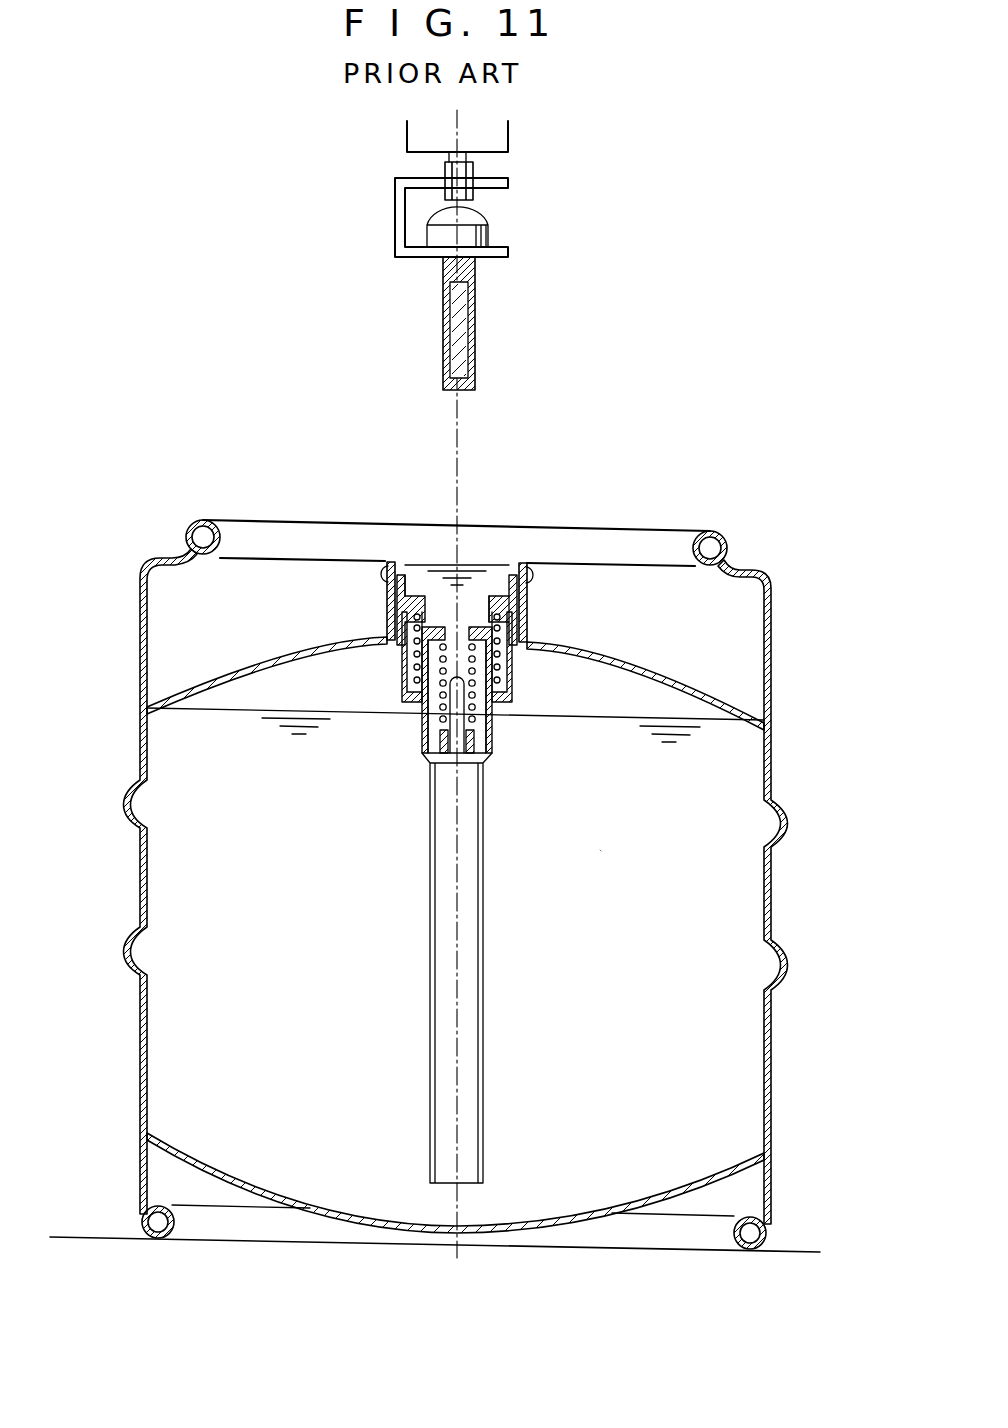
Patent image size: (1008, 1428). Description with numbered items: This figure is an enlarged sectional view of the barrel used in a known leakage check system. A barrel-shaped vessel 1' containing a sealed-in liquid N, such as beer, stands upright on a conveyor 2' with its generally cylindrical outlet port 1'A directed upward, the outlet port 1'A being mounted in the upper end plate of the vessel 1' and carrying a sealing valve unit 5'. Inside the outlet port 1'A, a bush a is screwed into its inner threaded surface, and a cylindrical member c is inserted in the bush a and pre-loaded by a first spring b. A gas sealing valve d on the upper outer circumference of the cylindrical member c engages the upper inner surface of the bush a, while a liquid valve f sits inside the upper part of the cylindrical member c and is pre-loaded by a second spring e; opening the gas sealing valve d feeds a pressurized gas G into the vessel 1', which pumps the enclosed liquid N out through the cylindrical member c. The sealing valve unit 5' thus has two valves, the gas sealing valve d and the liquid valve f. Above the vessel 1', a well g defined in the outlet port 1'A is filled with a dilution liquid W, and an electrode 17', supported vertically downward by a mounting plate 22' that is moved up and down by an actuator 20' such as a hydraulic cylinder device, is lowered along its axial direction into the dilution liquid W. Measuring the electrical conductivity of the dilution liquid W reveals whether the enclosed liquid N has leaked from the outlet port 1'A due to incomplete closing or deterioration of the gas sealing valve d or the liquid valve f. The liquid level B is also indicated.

The actuator 20' is at (513, 142).
The mounting plate 22' is at (502, 209).
The electrode 17' is at (513, 323).
The sealing valve unit 5' is at (455, 587).
The well g is at (428, 572).
The dilution liquid W is at (447, 578).
The liquid valve f is at (480, 600).
The gas sealing valve d is at (498, 612).
The outlet port 1'A is at (519, 557).
The bush a is at (512, 602).
The first spring b is at (500, 682).
The pressurized gas G is at (388, 680).
The second spring e is at (463, 712).
The cylindrical member c is at (425, 740).
The liquid B is at (745, 748).
The enclosed liquid N is at (728, 797).
The vessel 1' is at (489, 884).
The conveyor 2' is at (451, 1207).